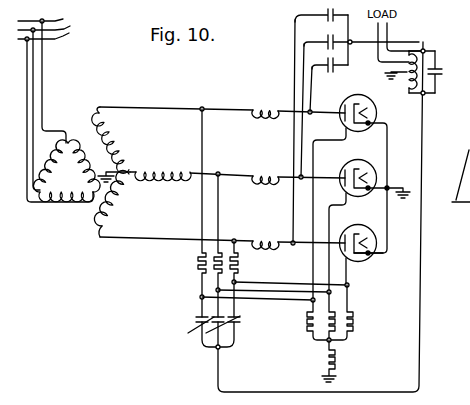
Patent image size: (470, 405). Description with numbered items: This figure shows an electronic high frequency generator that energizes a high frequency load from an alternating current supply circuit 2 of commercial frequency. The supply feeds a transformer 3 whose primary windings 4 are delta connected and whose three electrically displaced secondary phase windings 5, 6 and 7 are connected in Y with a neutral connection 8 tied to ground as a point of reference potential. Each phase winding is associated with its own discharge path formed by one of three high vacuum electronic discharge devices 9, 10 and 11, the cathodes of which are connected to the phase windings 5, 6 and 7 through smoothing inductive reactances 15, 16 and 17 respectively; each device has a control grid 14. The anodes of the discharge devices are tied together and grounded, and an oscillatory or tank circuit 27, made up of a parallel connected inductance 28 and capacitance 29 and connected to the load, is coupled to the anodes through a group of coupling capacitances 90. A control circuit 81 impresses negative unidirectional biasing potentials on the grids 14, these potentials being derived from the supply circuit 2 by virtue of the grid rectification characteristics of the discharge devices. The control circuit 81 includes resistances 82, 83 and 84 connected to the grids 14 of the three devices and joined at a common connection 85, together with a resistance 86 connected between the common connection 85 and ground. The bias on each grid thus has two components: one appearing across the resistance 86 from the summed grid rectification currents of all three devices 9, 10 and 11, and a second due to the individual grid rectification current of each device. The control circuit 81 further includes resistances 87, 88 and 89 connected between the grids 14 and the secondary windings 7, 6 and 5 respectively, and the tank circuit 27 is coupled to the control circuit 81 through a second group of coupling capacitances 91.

The alternating current supply circuit 2 is at (48, 28).
The transformer 3 is at (66, 168).
The primary windings 4 is at (68, 171).
The secondary phase winding 5 is at (118, 139).
The secondary phase winding 6 is at (161, 168).
The secondary phase winding 7 is at (114, 198).
The neutral connection 8 is at (131, 175).
The electronic discharge device 9 is at (358, 95).
The electronic discharge device 10 is at (361, 163).
The electronic discharge device 11 is at (360, 228).
The control grid 14 is at (344, 236).
The smoothing inductive reactance 15 is at (265, 116).
The smoothing inductive reactance 16 is at (266, 171).
The smoothing inductive reactance 17 is at (264, 238).
The oscillatory circuit 27 is at (424, 79).
The inductance 28 is at (407, 89).
The capacitance 29 is at (441, 80).
The control circuit 81 is at (333, 332).
The resistance 82 is at (308, 319).
The resistance 83 is at (332, 314).
The resistance 84 is at (353, 323).
The common connection 85 is at (326, 340).
The resistance 86 is at (333, 347).
The resistance 87 is at (239, 265).
The resistance 88 is at (221, 240).
The resistance 89 is at (196, 265).
The coupling capacitances 90 is at (327, 38).
The coupling capacitances 91 is at (203, 332).